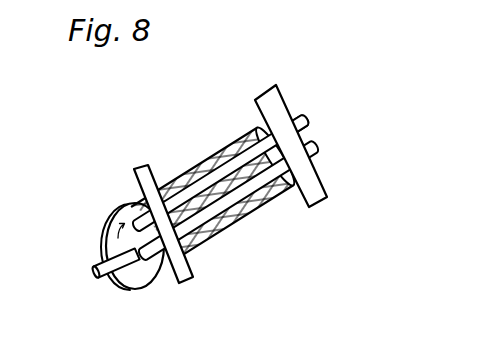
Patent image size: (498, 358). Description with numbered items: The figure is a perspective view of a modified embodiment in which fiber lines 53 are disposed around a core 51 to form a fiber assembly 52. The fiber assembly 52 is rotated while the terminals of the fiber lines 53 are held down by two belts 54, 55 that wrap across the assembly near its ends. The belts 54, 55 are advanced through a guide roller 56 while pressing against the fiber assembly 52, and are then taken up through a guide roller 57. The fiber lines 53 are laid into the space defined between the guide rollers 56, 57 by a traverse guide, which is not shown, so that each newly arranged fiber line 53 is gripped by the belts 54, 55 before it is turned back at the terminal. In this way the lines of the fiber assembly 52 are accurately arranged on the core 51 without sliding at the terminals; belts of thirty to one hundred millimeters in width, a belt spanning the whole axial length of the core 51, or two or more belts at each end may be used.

The core 51 is at (103, 285).
The fiber assembly 52 is at (189, 170).
The fiber lines 53 is at (218, 166).
The belt 54 is at (148, 166).
The belt 55 is at (280, 84).
The guide roller 56 is at (322, 140).
The guide roller 57 is at (311, 116).